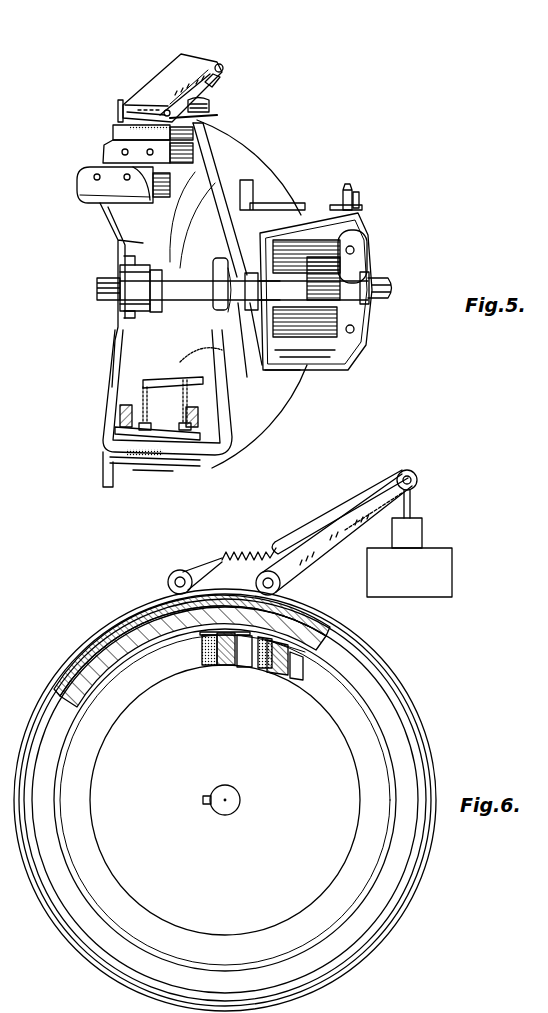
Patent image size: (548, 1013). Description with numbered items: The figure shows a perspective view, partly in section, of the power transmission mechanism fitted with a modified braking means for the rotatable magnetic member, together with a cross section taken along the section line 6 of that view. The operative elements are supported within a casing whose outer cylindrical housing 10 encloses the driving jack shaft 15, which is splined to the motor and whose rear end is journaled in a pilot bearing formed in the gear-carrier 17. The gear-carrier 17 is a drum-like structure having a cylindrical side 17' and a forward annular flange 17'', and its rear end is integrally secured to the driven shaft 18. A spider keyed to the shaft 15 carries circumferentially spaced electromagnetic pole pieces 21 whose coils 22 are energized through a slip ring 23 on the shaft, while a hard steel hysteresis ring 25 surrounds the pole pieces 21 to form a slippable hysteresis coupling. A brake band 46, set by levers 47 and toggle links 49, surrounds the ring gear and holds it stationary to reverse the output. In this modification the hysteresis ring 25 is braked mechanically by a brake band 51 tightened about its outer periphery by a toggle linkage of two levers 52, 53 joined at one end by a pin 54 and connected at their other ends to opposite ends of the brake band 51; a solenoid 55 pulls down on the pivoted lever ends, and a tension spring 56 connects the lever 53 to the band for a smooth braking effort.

In FIG. 5, the section line 6— 6 is at (165, 100).
In FIG. 5, the outer cylindrical housing 10 is at (176, 474).
In FIG. 5, the driving jack shaft 15 is at (100, 290).
In FIG. 6, the driving jack shaft 15 is at (232, 796).
In FIG. 5, the gear-carrier 17 is at (344, 291).
In FIG. 5, the cylindrical side 17' is at (288, 184).
In FIG. 5, the annular flange 17'' is at (299, 389).
In FIG. 5, the driven shaft 18 is at (392, 285).
In FIG. 6, the electromagnetic pole pieces 21 is at (217, 668).
In FIG. 6, the coils 22 is at (247, 668).
In FIG. 5, the slip ring 23 is at (125, 263).
In FIG. 5, the hysteresis ring 25 is at (140, 134).
In FIG. 6, the hysteresis ring 25 is at (120, 650).
In FIG. 5, the brake band 46 is at (356, 210).
In FIG. 5, the levers 47 is at (350, 186).
In FIG. 5, the toggle links 49 is at (218, 80).
In FIG. 5, the brake band 51 is at (220, 116).
In FIG. 6, the brake band 51 is at (140, 610).
In FIG. 5, the lever 52 is at (156, 90).
In FIG. 6, the lever 52 is at (330, 552).
In FIG. 5, the lever 53 is at (182, 58).
In FIG. 6, the lever 53 is at (313, 522).
In FIG. 5, the pin 54 is at (223, 70).
In FIG. 6, the pin 54 is at (417, 484).
In FIG. 5, the solenoid 55 is at (212, 101).
In FIG. 6, the solenoid 55 is at (422, 538).
In FIG. 6, the tension spring 56 is at (240, 545).